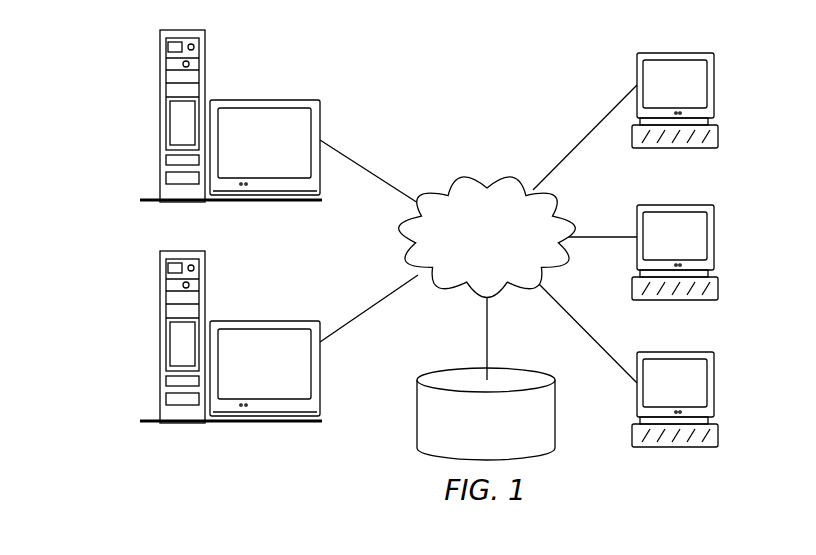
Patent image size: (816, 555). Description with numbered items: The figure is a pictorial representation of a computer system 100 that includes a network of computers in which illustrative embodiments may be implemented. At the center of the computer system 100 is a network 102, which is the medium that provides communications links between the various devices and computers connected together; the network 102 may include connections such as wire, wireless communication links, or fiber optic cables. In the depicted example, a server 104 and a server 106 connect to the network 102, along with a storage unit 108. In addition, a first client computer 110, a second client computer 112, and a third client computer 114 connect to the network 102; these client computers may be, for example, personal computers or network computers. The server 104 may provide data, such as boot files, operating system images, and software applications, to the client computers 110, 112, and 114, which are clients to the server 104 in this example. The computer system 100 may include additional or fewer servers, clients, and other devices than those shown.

The computer system 100 is at (542, 70).
The network 102 is at (456, 185).
The server 104 is at (160, 118).
The server 106 is at (160, 340).
The storage unit 108 is at (417, 423).
The first client computer 110 is at (718, 85).
The second client computer 112 is at (718, 237).
The third client computer 114 is at (718, 385).